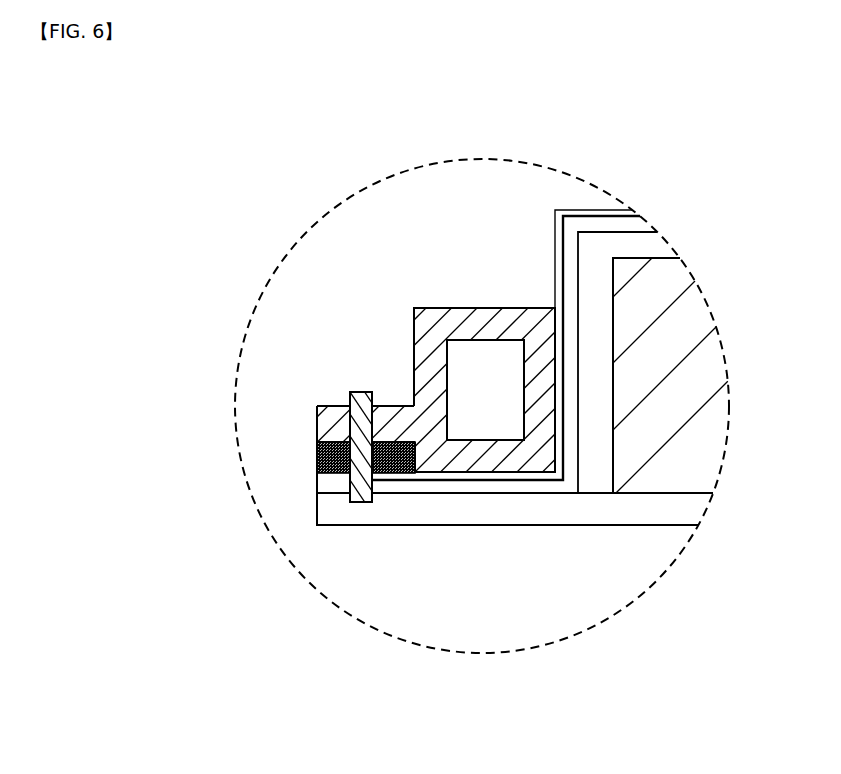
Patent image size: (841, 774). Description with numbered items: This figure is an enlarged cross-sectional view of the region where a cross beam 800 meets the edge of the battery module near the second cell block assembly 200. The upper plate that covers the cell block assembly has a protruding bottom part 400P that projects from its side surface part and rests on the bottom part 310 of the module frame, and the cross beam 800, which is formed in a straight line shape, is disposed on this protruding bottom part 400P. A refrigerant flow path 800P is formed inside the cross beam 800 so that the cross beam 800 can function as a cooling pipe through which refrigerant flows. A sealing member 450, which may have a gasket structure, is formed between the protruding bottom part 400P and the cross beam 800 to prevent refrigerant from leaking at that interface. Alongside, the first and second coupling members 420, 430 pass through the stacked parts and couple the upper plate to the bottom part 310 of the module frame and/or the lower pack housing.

The second cell block assembly 200 is at (657, 298).
The bottom part 310 is at (580, 510).
The protruding bottom part 400P is at (438, 490).
The first coupling member 420 is at (350, 392).
The second coupling member 430 is at (361, 441).
The sealing member 450 is at (318, 460).
The cross beam 800 is at (470, 327).
The refrigerant flow path 800P is at (480, 402).